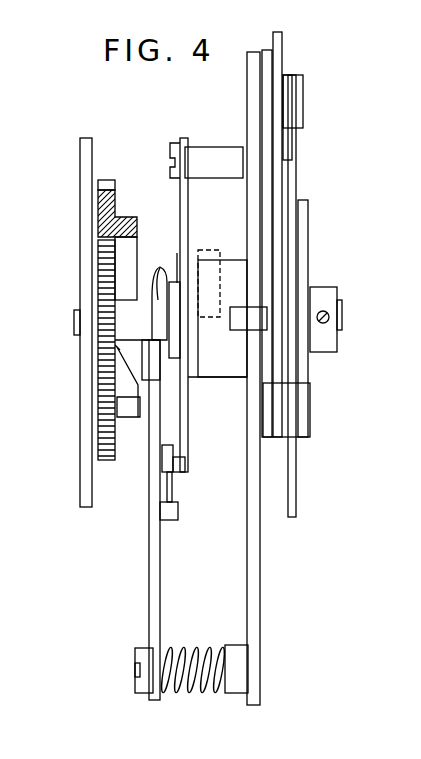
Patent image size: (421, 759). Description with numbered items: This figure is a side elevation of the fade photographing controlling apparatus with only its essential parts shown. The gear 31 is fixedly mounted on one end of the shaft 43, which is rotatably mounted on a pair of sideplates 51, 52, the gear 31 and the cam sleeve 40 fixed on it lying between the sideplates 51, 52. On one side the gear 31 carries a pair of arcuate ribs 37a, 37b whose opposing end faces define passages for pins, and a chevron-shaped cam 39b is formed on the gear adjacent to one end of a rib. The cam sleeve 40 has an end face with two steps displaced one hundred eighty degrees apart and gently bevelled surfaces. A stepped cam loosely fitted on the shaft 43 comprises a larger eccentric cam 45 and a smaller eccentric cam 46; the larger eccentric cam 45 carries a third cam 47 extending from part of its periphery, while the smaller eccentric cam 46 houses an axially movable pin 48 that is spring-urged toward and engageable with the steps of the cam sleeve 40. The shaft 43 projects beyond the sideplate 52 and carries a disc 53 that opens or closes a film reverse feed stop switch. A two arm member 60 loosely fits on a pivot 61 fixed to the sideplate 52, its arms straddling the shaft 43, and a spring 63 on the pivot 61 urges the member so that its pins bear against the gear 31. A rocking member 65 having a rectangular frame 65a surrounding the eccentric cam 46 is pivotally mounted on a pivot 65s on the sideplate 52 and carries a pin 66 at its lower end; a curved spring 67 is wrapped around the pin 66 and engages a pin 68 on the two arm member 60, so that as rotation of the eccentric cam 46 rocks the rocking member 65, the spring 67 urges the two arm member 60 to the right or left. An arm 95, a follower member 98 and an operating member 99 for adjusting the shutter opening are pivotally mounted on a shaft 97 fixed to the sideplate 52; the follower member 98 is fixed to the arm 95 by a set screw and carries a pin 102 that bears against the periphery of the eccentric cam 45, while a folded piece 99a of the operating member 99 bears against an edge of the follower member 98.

The gear 31 is at (106, 179).
The arcuate rib 37a is at (132, 420).
The arcuate rib 37b is at (120, 216).
The chevron-shaped cam 39b is at (108, 390).
The cam sleeve 40 is at (115, 307).
The shaft 43 is at (152, 270).
The eccentric cam 45 is at (223, 378).
The eccentric cam 46 is at (175, 253).
The third cam 47 is at (192, 255).
The pin 48 is at (117, 347).
The sideplate 51 is at (86, 508).
The sideplate 52 is at (260, 557).
The disc 53 is at (305, 230).
The two arm member 60 is at (149, 572).
The pivot 61 is at (190, 693).
The spring 63 is at (190, 648).
The rocking member 65 is at (188, 428).
The rectangular frame 65a is at (205, 268).
The pivot 65s is at (212, 147).
The pin 66 is at (186, 462).
The curved spring 67 is at (173, 490).
The pin 68 is at (170, 520).
The arm 95 is at (283, 55).
The shaft 97 is at (303, 102).
The follower member 98 is at (275, 160).
The operating member 99 is at (295, 182).
The folded piece 99a is at (280, 400).
The pin 102 is at (232, 317).